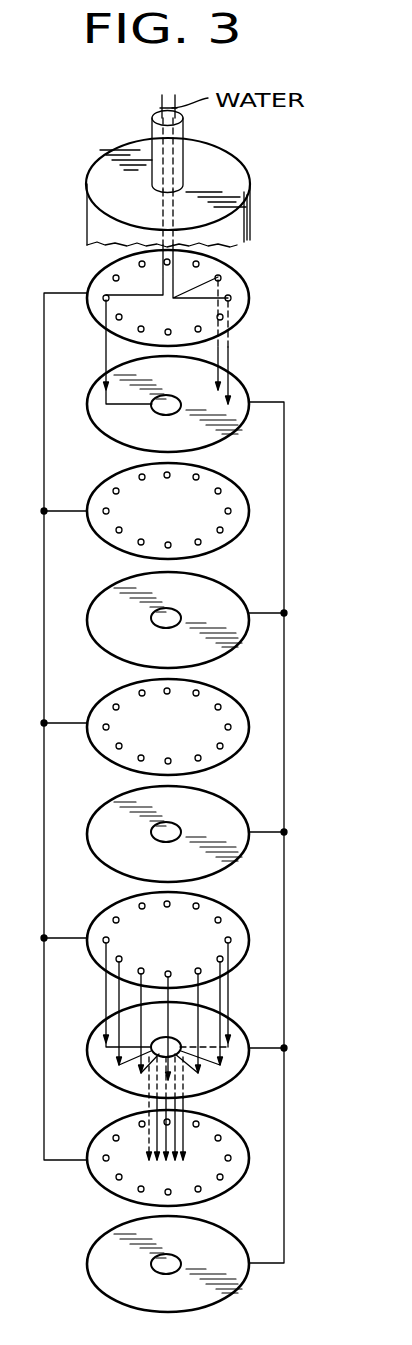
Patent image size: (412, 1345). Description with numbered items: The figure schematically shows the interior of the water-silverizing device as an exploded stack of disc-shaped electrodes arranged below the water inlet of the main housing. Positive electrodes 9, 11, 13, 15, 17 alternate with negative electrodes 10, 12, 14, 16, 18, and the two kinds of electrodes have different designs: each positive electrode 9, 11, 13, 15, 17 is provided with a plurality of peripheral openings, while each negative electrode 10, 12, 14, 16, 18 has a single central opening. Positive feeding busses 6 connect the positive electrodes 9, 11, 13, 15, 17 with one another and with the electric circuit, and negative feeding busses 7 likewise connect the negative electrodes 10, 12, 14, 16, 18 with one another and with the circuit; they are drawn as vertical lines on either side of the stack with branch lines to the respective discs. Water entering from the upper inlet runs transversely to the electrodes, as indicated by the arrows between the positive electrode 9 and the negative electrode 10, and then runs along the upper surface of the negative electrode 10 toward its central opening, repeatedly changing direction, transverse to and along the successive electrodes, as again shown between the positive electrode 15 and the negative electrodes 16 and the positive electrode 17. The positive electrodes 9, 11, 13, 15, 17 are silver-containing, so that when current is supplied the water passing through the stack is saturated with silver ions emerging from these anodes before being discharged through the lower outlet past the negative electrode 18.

The positive feeding busses 6 is at (284, 978).
The negative feeding busses 7 is at (43, 883).
The positive electrode 9 is at (249, 293).
The negative electrode 10 is at (240, 388).
The positive electrode 11 is at (226, 478).
The negative electrode 12 is at (225, 584).
The positive electrode 13 is at (222, 692).
The negative electrode 14 is at (220, 798).
The positive electrode 15 is at (220, 912).
The negative electrode 16 is at (238, 1025).
The positive electrode 17 is at (226, 1124).
The negative electrode 18 is at (224, 1232).